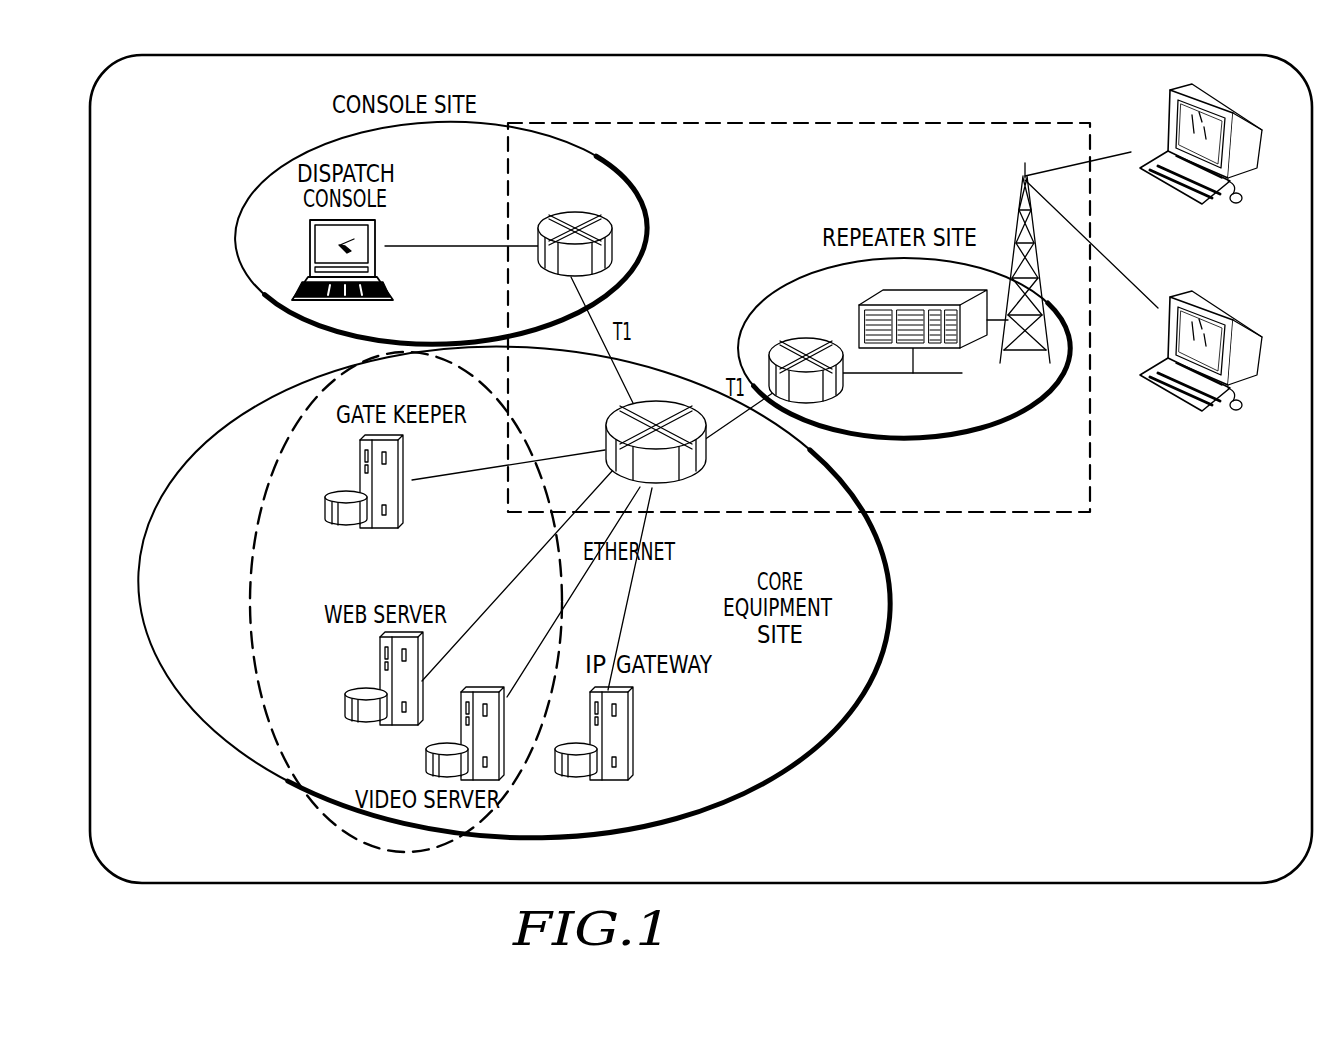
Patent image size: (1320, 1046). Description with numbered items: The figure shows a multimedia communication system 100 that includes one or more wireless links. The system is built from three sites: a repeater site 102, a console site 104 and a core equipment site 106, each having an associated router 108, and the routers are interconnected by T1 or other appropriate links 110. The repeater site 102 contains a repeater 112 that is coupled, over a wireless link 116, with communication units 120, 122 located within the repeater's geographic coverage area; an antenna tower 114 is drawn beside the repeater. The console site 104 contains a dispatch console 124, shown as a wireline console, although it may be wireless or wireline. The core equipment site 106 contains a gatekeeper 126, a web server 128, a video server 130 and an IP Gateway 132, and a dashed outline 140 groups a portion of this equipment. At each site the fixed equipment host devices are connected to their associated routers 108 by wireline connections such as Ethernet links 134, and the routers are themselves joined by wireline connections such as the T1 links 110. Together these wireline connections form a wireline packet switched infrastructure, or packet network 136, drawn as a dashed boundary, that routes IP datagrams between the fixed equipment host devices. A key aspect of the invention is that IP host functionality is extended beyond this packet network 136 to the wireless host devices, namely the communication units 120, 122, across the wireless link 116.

The multimedia communication system 100 is at (781, 97).
The repeater site 102 is at (997, 427).
The console site 104 is at (297, 152).
The core equipment site 106 is at (858, 705).
The router 108 is at (573, 212).
The link 110 is at (612, 357).
The repeater 112 is at (872, 298).
The antenna tower 114 is at (1022, 197).
The wireless link 116 is at (1107, 157).
The communication unit 120 is at (1223, 107).
The communication unit 122 is at (1230, 316).
The dispatch console 124 is at (310, 246).
The gatekeeper 126 is at (405, 498).
The web server 128 is at (376, 664).
The video server 130 is at (505, 738).
The IP Gateway 132 is at (636, 725).
The Ethernet link 134 is at (430, 247).
The packet network 136 is at (993, 123).
The server group 140 is at (266, 514).